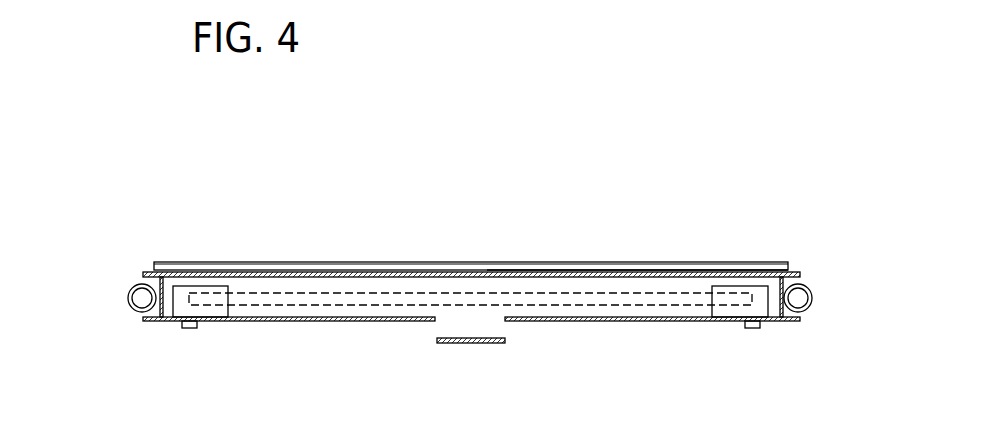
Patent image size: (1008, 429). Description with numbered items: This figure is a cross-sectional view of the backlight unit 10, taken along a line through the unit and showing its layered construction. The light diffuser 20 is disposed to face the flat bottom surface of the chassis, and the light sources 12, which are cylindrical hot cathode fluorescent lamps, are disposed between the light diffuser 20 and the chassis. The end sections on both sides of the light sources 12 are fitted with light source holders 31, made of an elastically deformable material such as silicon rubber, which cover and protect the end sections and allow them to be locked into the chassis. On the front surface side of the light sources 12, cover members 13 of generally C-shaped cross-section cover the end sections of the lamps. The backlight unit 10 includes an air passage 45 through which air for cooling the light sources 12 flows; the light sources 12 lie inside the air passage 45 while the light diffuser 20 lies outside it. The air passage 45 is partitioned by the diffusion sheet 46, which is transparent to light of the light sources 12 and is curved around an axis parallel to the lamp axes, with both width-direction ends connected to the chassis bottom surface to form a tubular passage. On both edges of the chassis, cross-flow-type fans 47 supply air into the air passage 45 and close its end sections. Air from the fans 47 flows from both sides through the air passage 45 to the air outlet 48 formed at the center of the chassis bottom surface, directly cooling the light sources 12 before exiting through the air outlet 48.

The backlight unit 10 is at (461, 279).
The light sources 12 is at (355, 295).
The cover members 13 is at (170, 292).
The light diffuser 20 is at (262, 262).
The light source holders 31 is at (215, 312).
The air passage 45 is at (568, 287).
The diffusion sheet 46 is at (487, 277).
The fans 47 is at (127, 289).
The air outlet 48 is at (478, 328).